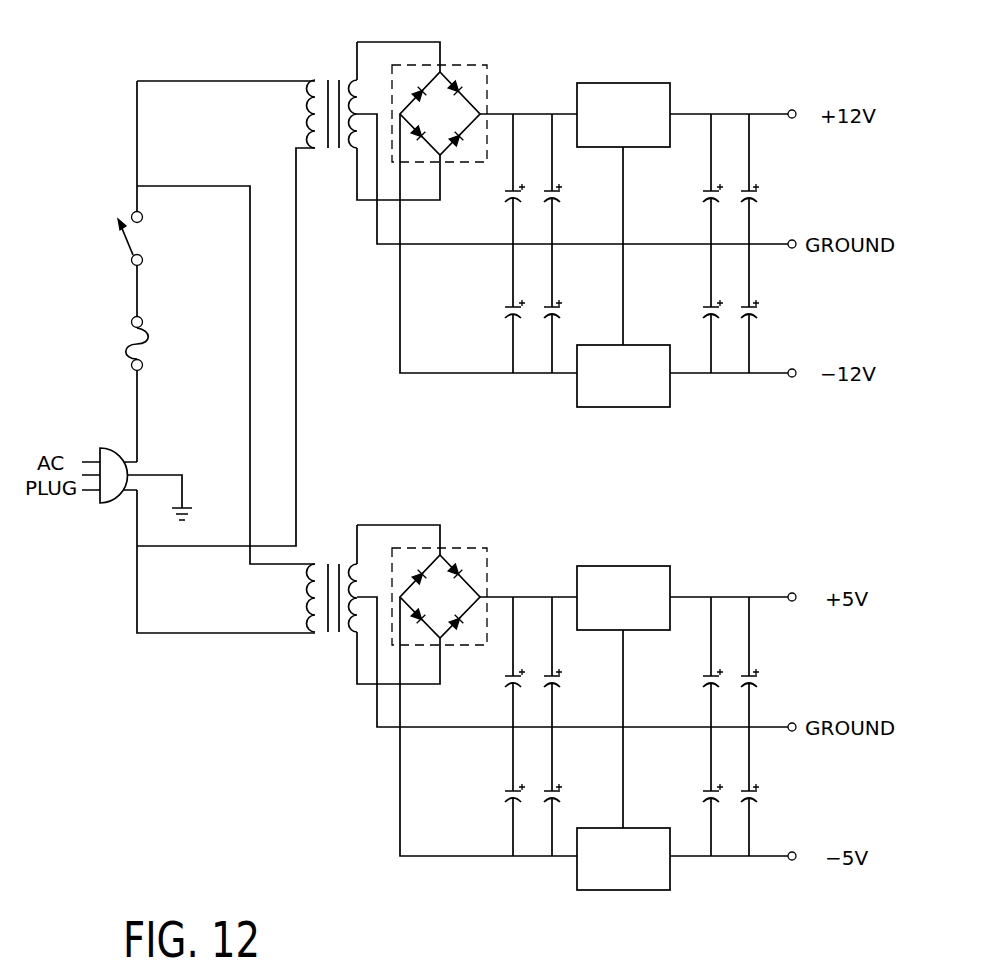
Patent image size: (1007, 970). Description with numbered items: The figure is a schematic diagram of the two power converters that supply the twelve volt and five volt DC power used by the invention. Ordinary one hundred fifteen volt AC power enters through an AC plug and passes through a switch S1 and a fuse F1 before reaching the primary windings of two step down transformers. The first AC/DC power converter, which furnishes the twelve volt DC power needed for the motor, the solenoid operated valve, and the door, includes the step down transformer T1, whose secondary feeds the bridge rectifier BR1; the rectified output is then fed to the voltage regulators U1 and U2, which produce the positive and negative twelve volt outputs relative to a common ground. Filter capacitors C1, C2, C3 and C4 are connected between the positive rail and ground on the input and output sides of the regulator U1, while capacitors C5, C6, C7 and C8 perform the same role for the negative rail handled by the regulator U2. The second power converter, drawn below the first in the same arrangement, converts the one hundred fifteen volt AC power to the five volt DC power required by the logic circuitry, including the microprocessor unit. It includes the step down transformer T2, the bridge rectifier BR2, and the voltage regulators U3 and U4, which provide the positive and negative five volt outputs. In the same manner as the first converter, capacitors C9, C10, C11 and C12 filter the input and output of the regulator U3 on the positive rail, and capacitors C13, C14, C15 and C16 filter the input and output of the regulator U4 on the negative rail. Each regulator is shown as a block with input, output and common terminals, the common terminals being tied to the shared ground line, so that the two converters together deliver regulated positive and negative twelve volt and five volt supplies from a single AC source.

The power switch S1 is at (121, 239).
The fuse 5A F1 is at (124, 344).
The step down transformer T1 is at (332, 142).
The step down transformer T2 is at (332, 626).
The bridge rectifier BR1 is at (439, 103).
The bridge rectifier BR2 is at (439, 586).
The voltage regulator U1 is at (625, 109).
The voltage regulator U2 is at (625, 385).
The voltage regulator U3 is at (625, 592).
The voltage regulator U4 is at (625, 867).
The filter capacitor 2000uF C1 is at (493, 179).
The capacitor 1uF C2 is at (563, 179).
The capacitor 1uF C3 is at (702, 179).
The capacitor 100uF C4 is at (765, 179).
The filter capacitor 2000uF C5 is at (493, 308).
The capacitor 1uF C6 is at (563, 308).
The capacitor 1uF C7 is at (702, 308).
The capacitor 100uF C8 is at (765, 308).
The filter capacitor 2000uF C9 is at (493, 662).
The capacitor 1uF C10 is at (567, 662).
The capacitor 1uF C11 is at (697, 662).
The capacitor 100uF C12 is at (766, 662).
The filter capacitor 2000uF C13 is at (493, 791).
The capacitor 1uF C14 is at (567, 791).
The capacitor 1uF C15 is at (697, 791).
The capacitor 100uF C16 is at (766, 791).